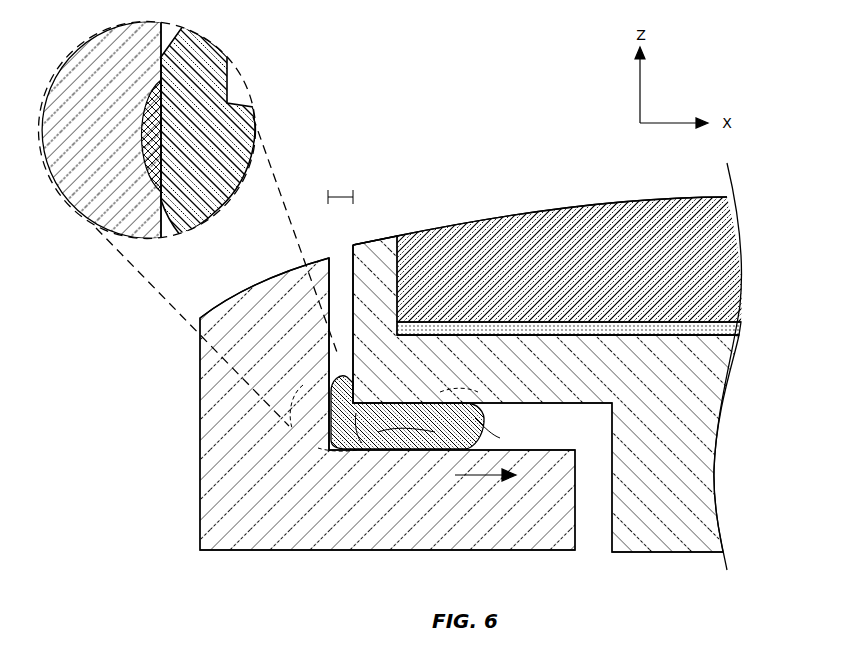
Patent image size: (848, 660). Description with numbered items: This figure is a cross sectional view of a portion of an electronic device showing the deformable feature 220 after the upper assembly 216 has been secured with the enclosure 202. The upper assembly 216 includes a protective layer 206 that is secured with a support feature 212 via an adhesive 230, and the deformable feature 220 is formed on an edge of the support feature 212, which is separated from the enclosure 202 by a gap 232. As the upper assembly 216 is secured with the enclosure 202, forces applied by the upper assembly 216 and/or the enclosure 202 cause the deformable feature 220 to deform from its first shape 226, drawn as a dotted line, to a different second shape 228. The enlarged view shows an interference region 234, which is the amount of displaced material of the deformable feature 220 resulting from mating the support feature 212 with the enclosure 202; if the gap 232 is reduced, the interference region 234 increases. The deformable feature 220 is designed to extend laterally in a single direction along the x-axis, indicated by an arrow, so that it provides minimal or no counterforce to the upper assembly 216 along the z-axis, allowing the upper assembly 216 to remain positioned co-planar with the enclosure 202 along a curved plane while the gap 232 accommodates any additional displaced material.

The enclosure 202 is at (255, 514).
The protective layer 206 is at (576, 273).
The support feature 212 is at (651, 409).
The upper assembly 216 is at (461, 168).
The deformable feature 220 is at (341, 325).
The first shape 226 is at (472, 423).
The second shape 228 is at (483, 412).
The adhesive 230 is at (723, 328).
The gap 232 is at (337, 193).
The interference region 234 is at (138, 72).